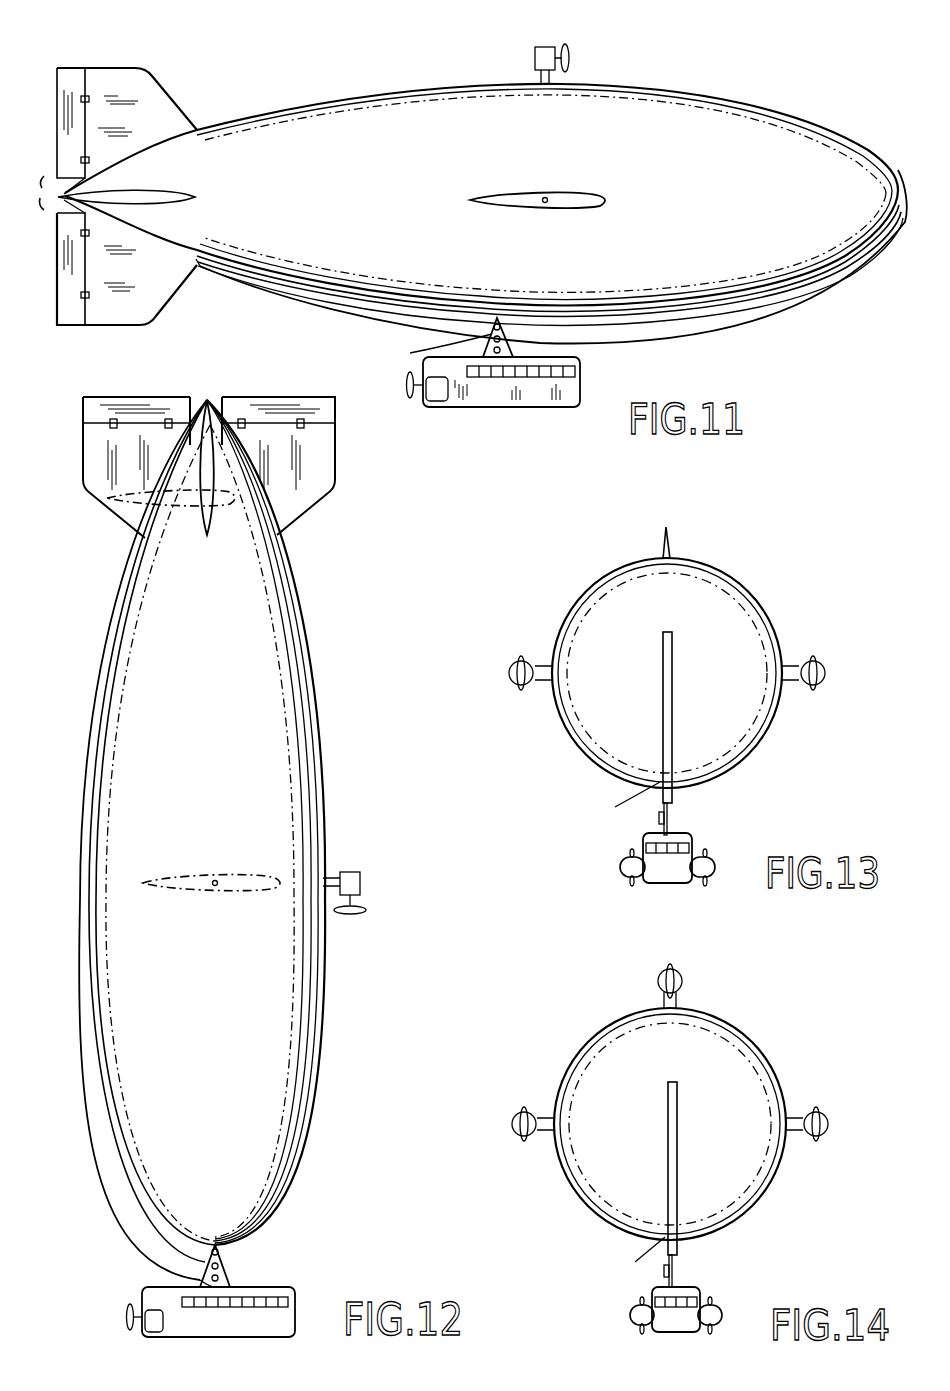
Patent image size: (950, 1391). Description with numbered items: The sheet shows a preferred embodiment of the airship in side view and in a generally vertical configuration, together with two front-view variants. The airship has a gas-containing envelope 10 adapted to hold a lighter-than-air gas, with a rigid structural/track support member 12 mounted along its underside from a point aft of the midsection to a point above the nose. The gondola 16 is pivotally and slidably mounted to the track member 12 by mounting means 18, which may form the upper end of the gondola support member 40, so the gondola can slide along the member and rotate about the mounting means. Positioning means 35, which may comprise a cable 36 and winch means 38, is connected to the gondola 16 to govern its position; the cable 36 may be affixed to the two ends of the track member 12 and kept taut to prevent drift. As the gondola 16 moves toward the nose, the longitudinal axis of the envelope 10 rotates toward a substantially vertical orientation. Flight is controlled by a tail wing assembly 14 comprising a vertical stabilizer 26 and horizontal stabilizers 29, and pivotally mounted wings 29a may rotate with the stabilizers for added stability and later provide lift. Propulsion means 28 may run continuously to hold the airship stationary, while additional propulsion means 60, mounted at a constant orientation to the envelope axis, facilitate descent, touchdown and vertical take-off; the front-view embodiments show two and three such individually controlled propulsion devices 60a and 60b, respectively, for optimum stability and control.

In FIG. 11, the gas-containing envelope 10 is at (772, 118).
In FIG. 12, the gas-containing envelope 10 is at (305, 1038).
In FIG. 13, the gas-containing envelope 10 is at (740, 606).
In FIG. 14, the gas-containing envelope 10 is at (752, 1066).
In FIG. 11, the structural/track support member 12 is at (806, 290).
In FIG. 12, the structural/track support member 12 is at (145, 1213).
In FIG. 13, the structural/track support member 12 is at (673, 690).
In FIG. 14, the structural/track support member 12 is at (678, 1135).
In FIG. 11, the tail wing assembly 14 is at (185, 68).
In FIG. 11, the gondola 16 is at (582, 397).
In FIG. 12, the gondola 16 is at (286, 1291).
In FIG. 13, the gondola 16 is at (677, 880).
In FIG. 14, the gondola 16 is at (690, 1330).
In FIG. 11, the mounting means 18 is at (505, 320).
In FIG. 11, the vertical stabilizer 26 is at (108, 70).
In FIG. 12, the vertical stabilizer 26 is at (333, 485).
In FIG. 13, the vertical stabilizer 26 is at (670, 543).
In FIG. 11, the propulsion means 28 is at (405, 385).
In FIG. 12, the propulsion means 28 is at (124, 1309).
In FIG. 13, the propulsion means 28 is at (620, 861).
In FIG. 14, the propulsion means 28 is at (630, 1311).
In FIG. 12, the horizontal stabilizer 29 is at (107, 498).
In FIG. 11, the wings 29a is at (580, 197).
In FIG. 12, the wings 29a is at (143, 883).
In FIG. 12, the positioning means 35 is at (240, 1275).
In FIG. 11, the cable 36 is at (738, 330).
In FIG. 12, the cable 36 is at (104, 1182).
In FIG. 13, the cable 36 is at (615, 807).
In FIG. 14, the cable 36 is at (635, 1262).
In FIG. 11, the winch means 38 is at (503, 348).
In FIG. 11, the gondola support member 40 is at (410, 353).
In FIG. 13, the gondola support member 40 is at (668, 812).
In FIG. 14, the gondola support member 40 is at (673, 1265).
In FIG. 11, the additional propulsion means 60 is at (556, 50).
In FIG. 12, the additional propulsion means 60 is at (361, 879).
In FIG. 13, the additional propulsion devices 60a is at (508, 672).
In FIG. 14, the additional propulsion devices 60b is at (512, 1125).